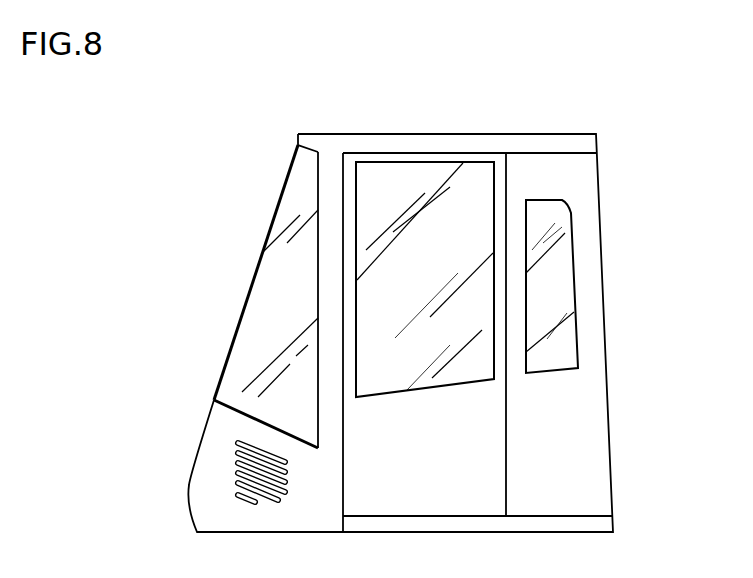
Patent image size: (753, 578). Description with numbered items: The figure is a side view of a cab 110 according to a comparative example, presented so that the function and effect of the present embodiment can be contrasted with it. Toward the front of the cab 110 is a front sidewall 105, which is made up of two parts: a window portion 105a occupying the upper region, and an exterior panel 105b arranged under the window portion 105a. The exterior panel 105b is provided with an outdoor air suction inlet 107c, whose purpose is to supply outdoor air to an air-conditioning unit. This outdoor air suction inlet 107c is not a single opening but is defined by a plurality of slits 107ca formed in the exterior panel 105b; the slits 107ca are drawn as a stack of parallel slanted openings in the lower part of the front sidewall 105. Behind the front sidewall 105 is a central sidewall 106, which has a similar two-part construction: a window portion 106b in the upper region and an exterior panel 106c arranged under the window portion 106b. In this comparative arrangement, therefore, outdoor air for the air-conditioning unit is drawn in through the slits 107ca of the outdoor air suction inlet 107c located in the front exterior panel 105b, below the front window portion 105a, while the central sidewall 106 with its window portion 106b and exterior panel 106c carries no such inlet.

The cab 110 is at (617, 107).
The front sidewall 105 is at (178, 260).
The window portion 105a is at (275, 283).
The exterior panel 105b is at (254, 438).
The central sidewall 106 is at (453, 157).
The window portion 106b is at (387, 185).
The exterior panel 106c is at (486, 448).
The outdoor air suction inlet 107c is at (98, 415).
The slits 107ca is at (238, 445).